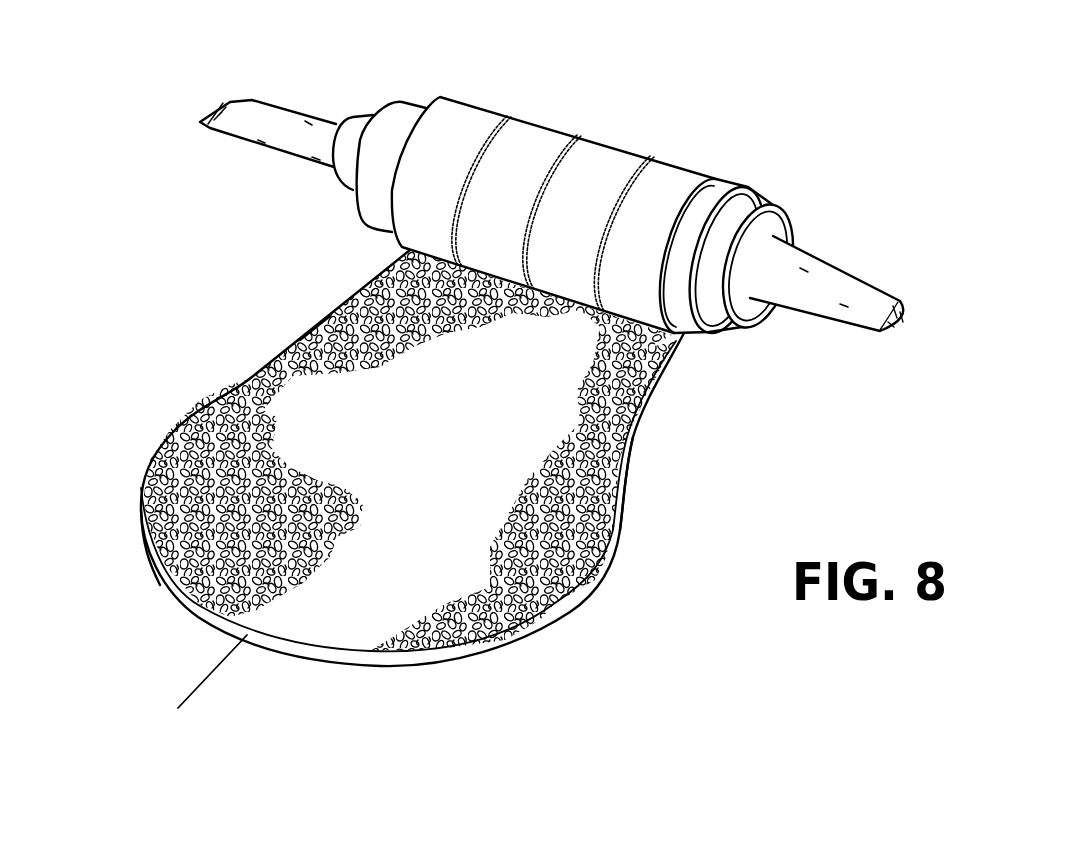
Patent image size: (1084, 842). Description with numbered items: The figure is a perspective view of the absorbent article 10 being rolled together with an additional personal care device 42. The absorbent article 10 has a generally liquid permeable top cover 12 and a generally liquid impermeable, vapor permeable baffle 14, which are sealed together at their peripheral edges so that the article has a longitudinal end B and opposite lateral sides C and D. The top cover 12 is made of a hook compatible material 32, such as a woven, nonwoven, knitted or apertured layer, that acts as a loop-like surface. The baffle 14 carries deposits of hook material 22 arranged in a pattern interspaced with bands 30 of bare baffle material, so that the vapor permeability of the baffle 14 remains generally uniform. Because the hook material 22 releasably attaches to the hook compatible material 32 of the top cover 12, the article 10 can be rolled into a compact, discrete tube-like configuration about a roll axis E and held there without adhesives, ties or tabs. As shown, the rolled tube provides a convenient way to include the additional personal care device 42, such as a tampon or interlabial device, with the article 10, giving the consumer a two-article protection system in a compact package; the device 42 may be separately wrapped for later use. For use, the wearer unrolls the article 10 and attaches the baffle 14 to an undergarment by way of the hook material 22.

The absorbent article 10 is at (487, 370).
The top cover 12 is at (252, 376).
The baffle 14 is at (541, 117).
The hook material 22 is at (652, 158).
The bands of bare baffle material 30 is at (460, 110).
The hook compatible material 32 is at (188, 418).
The additional personal care device 42 is at (325, 120).
The longitudinal end B is at (148, 566).
The lateral side C is at (630, 437).
The lateral side D is at (295, 362).
The roll axis E is at (193, 688).